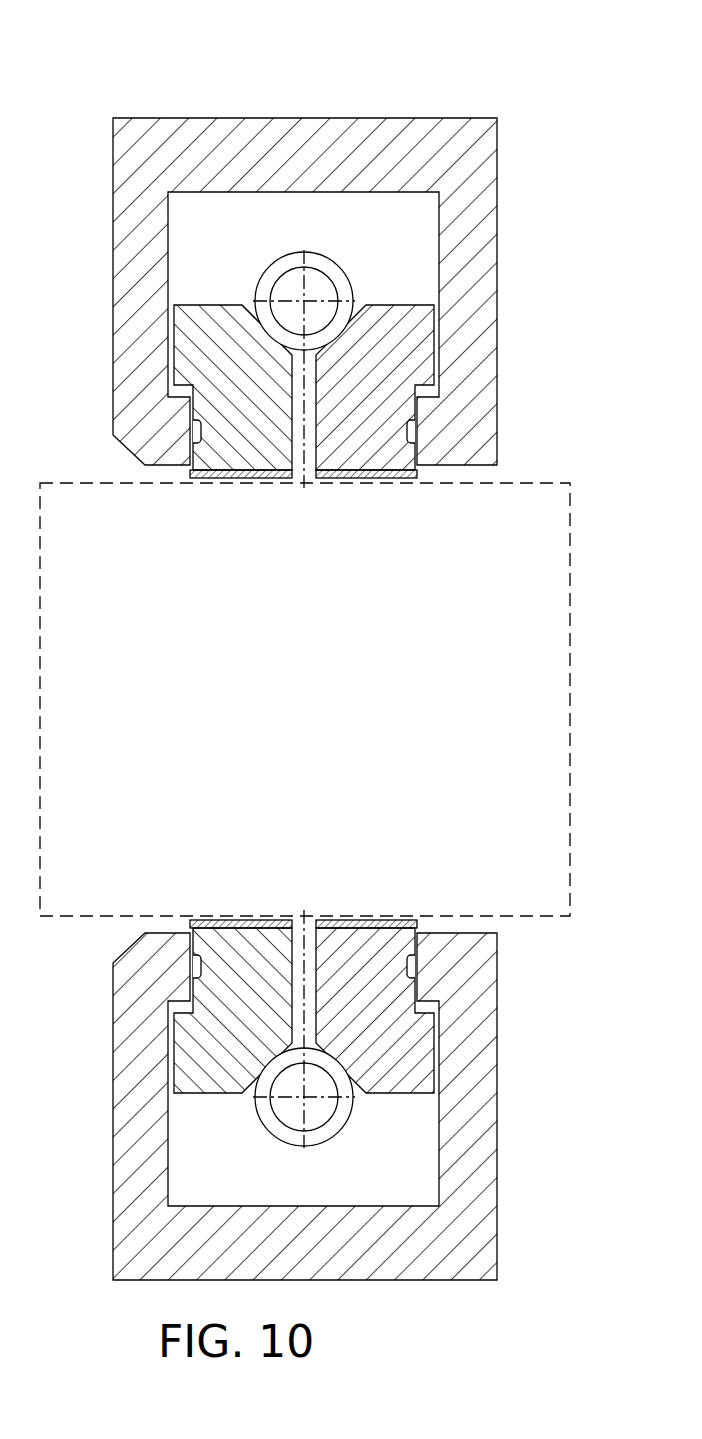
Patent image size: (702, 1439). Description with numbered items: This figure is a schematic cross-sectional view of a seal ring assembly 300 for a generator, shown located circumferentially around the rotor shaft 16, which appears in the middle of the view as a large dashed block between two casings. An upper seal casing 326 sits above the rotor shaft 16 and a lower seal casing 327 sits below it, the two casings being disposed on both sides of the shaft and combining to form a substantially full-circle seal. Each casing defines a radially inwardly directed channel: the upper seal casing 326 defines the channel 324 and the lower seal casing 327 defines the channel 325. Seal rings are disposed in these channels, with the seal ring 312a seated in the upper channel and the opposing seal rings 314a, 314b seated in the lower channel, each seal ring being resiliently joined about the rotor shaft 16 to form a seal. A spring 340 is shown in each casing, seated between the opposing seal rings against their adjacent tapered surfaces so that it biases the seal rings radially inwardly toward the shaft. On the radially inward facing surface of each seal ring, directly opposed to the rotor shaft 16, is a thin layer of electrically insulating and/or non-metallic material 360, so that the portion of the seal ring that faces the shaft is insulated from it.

The seal ring assembly 300 is at (116, 84).
The upper seal casing 326 is at (383, 138).
The lower seal casing 327 is at (382, 1258).
The radially inwardly directed channel 324 is at (405, 247).
The radially inwardly directed channel 325 is at (405, 1178).
The spring 340 is at (271, 271).
The seal ring 312a is at (203, 322).
The seal ring 314a is at (205, 1073).
The seal ring 314b is at (415, 343).
The electrically insulating material 360 is at (215, 478).
The rotor shaft 16 is at (322, 706).